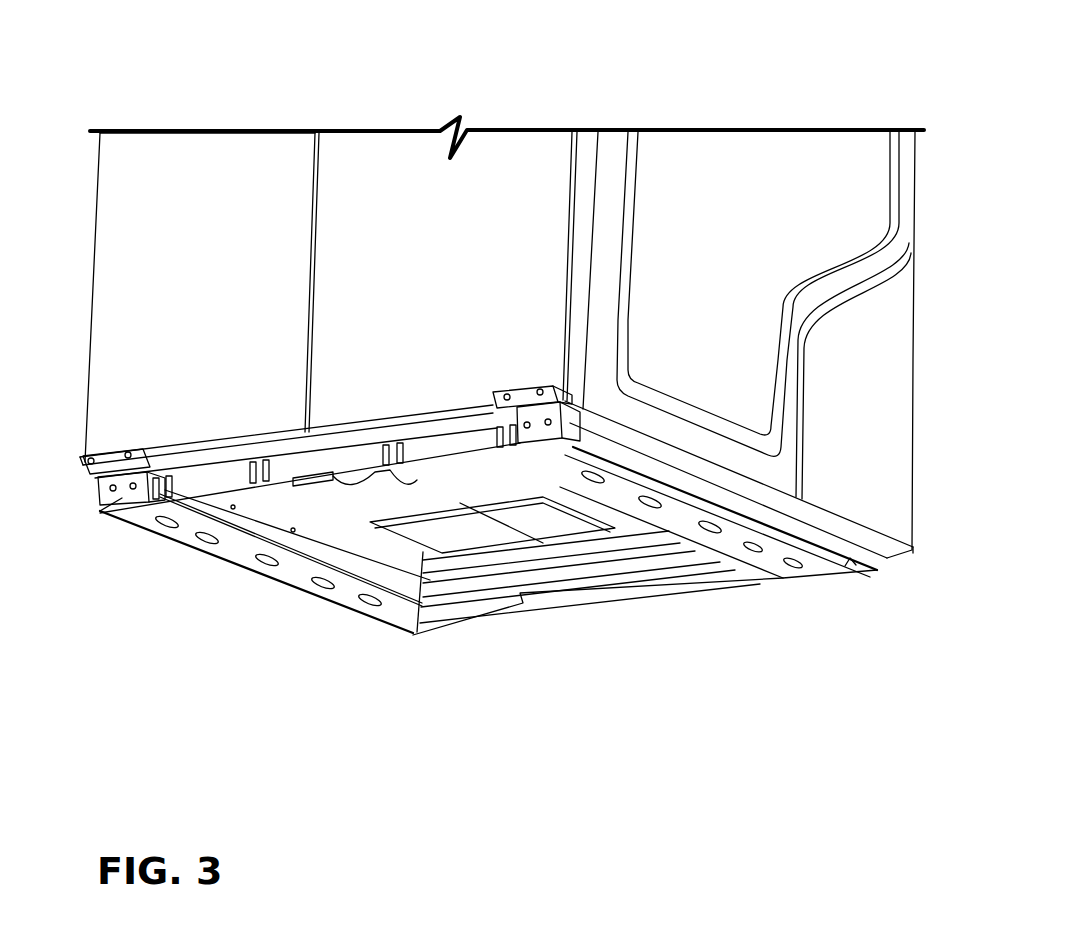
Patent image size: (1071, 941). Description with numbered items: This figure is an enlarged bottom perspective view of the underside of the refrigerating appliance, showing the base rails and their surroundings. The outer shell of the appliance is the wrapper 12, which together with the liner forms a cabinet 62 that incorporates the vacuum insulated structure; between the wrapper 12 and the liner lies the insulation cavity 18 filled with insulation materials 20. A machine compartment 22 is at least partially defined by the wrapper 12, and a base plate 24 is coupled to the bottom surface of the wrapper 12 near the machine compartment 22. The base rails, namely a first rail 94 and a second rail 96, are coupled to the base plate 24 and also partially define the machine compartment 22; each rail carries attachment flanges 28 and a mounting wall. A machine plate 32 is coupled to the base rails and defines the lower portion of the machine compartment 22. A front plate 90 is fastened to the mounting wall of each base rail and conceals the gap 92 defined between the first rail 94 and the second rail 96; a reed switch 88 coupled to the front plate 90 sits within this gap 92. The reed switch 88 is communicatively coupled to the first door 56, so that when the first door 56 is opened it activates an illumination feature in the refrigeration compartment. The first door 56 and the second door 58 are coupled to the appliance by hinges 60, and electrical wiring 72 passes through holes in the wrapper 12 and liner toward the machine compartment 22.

The wrapper 12 is at (747, 160).
The insulation cavity 18 is at (788, 187).
The insulation materials 20 is at (848, 177).
The machine compartment 22 is at (878, 480).
The base plate 24 is at (362, 493).
The attachment flanges 28 is at (500, 590).
The machine plate 32 is at (710, 580).
The first door 56 is at (515, 157).
The second door 58 is at (163, 167).
The hinges 60 is at (110, 487).
The cabinet 62 is at (97, 188).
The electrical wiring 72 is at (305, 493).
The reed switch 88 is at (280, 573).
The front plate 90 is at (447, 440).
The gap 92 is at (193, 547).
The first rail 94 is at (233, 545).
The second rail 96 is at (807, 568).